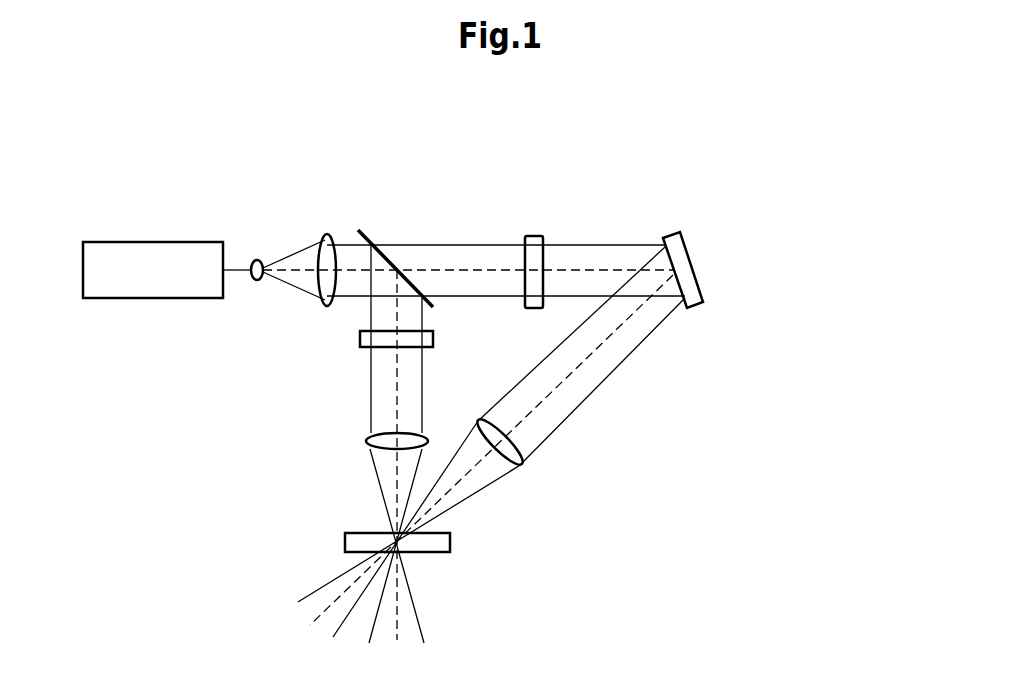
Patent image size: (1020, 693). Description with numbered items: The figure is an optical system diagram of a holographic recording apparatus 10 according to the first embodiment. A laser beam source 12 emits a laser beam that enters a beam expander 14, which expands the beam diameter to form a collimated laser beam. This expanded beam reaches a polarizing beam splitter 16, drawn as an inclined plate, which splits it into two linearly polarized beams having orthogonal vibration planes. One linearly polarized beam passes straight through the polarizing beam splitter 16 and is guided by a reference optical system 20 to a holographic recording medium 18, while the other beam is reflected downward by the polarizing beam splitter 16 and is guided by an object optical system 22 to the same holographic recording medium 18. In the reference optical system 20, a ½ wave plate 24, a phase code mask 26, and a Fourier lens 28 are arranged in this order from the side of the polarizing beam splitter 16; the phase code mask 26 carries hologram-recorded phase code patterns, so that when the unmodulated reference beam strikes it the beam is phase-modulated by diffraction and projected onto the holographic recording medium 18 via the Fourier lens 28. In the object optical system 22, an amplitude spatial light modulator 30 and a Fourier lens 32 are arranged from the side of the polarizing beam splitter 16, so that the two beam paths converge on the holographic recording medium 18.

The holographic recording apparatus 10 is at (612, 113).
The laser beam source 12 is at (137, 243).
The beam expander 14 is at (333, 232).
The polarizing beam splitter 16 is at (360, 232).
The holographic recording medium 18 is at (450, 543).
The reference optical system 20 is at (629, 375).
The object optical system 22 is at (362, 414).
The ½ wave plate 24 is at (535, 236).
The phase code mask 26 is at (693, 306).
The Fourier lens 28 is at (523, 463).
The amplitude spatial light modulator 30 is at (360, 336).
The Fourier lens 32 is at (428, 437).